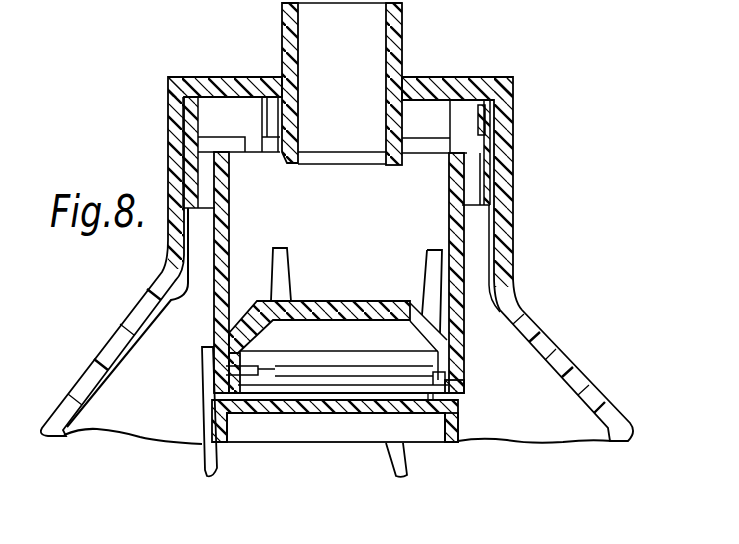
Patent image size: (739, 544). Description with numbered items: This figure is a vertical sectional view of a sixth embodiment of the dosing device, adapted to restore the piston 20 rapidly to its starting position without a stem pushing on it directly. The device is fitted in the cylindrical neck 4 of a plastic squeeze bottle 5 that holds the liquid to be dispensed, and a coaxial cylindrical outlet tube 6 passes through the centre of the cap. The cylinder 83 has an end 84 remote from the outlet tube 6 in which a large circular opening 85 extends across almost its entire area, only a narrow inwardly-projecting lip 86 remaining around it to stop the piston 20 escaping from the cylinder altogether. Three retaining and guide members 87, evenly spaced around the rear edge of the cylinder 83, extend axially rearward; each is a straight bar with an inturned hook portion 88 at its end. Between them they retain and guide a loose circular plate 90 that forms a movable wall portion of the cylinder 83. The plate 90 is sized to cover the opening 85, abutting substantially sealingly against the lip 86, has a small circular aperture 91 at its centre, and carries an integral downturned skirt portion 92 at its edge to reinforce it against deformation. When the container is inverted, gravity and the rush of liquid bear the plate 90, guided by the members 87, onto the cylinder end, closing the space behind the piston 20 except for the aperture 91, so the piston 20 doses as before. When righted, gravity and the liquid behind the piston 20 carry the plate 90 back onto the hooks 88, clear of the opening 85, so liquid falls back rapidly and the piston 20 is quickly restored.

The cylindrical neck 4 is at (503, 231).
The plastic squeeze bottle 5 is at (570, 367).
The outlet tube 6 is at (400, 48).
The piston 20 is at (333, 327).
The cylinder 83 is at (212, 317).
The end of the cylinder 84 is at (465, 393).
The circular opening 85 is at (457, 412).
The lip 86 is at (225, 383).
The retaining and guide members 87 is at (200, 411).
The hook portion 88 is at (204, 466).
The circular plate 90 is at (290, 445).
The aperture 91 is at (334, 414).
The skirt portion 92 is at (453, 440).